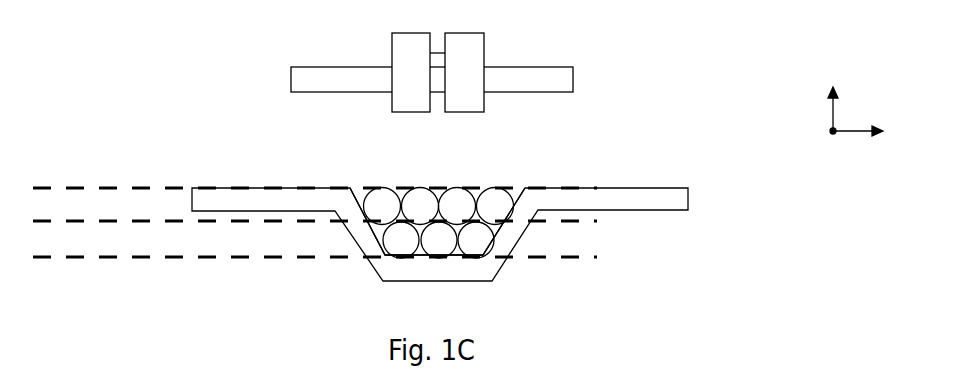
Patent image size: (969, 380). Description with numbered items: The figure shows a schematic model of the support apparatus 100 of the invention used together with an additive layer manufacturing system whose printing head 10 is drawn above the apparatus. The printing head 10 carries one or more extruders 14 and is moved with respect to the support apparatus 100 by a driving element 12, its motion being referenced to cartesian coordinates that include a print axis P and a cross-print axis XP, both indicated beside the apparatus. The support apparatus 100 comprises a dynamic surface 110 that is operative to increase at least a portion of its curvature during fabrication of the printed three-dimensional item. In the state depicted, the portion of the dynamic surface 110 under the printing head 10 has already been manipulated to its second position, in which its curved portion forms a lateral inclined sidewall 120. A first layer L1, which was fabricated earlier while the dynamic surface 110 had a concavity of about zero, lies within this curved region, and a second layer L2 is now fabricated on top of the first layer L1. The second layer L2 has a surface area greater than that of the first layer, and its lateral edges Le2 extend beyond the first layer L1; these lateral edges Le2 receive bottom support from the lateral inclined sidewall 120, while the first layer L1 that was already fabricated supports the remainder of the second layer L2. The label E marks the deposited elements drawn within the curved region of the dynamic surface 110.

The printing head 10 is at (375, 58).
The driving element 12 is at (291, 82).
The extruders 14 is at (392, 55).
The support apparatus 100 is at (494, 168).
The dynamic surface 110 is at (645, 211).
The lateral inclined sidewall 120 is at (350, 204).
The conductive elements E is at (496, 188).
The lateral edges of the second layer Le2 is at (376, 200).
The first layer L1 is at (55, 242).
The second layer L2 is at (55, 207).
The print axis P is at (833, 135).
The cross-print axis XP is at (899, 136).